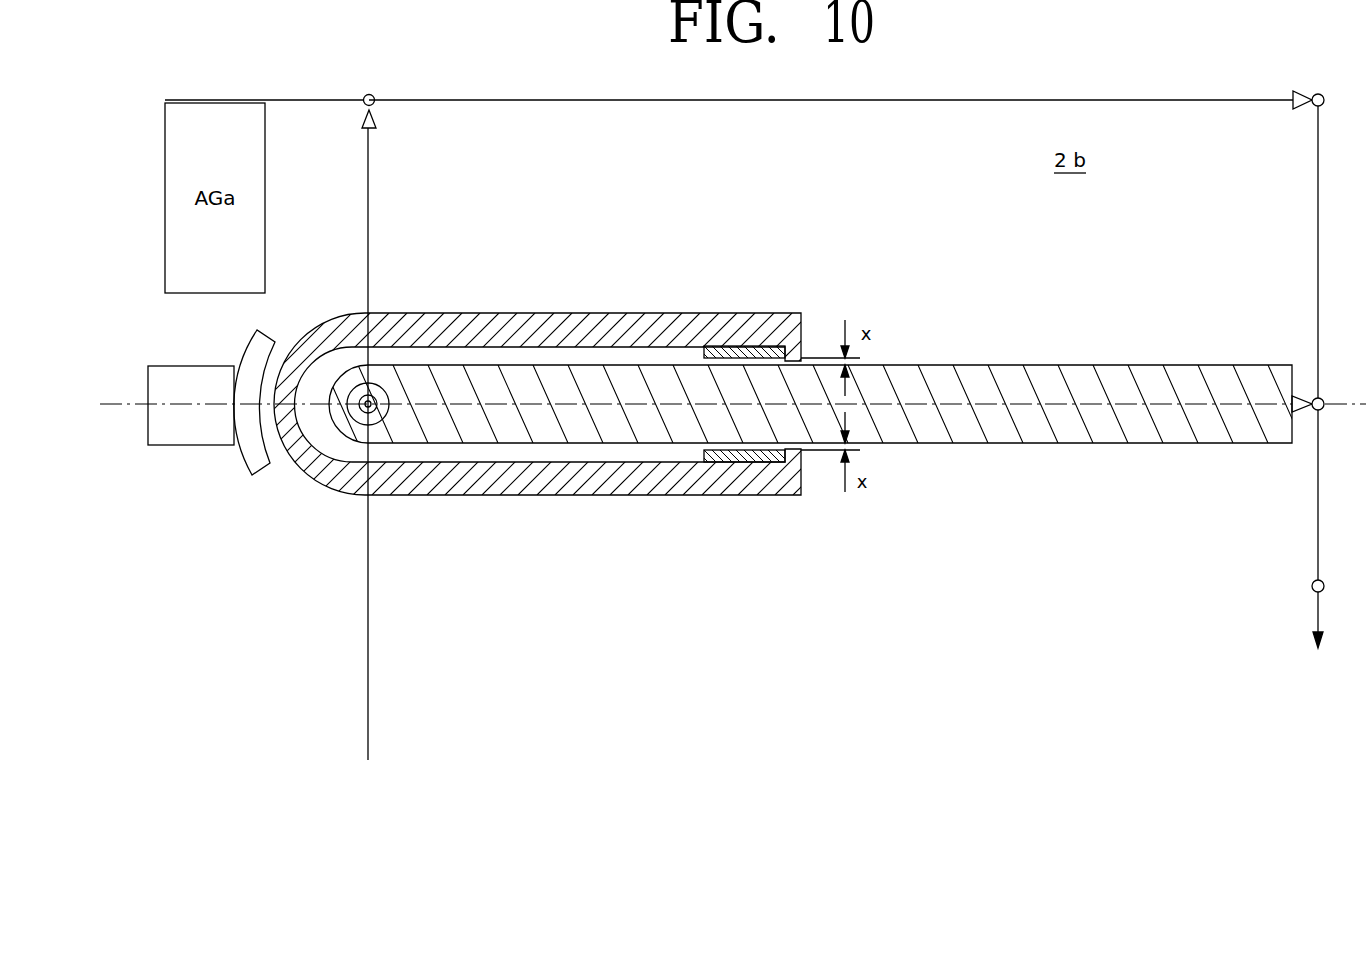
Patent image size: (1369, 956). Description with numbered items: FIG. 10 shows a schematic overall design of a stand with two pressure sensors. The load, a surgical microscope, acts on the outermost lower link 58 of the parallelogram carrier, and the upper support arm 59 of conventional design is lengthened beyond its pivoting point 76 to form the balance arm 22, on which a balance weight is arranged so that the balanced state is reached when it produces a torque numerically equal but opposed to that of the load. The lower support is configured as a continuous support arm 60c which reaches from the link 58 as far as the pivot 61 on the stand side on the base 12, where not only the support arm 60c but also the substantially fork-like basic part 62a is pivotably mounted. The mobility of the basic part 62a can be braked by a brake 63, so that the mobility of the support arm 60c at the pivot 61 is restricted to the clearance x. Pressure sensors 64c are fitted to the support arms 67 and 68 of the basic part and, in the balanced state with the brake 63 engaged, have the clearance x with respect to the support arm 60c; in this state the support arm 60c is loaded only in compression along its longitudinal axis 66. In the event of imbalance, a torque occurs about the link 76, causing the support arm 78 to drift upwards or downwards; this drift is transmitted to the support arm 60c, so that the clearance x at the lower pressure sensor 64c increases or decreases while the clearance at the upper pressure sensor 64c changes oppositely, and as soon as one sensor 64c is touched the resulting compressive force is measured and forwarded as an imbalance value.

The balance arm 22 is at (338, 100).
The pivoting point 76 is at (373, 100).
The upper support arm 59 is at (1042, 100).
The support arm 78 is at (1318, 240).
The outermost lower link 58 is at (1316, 412).
The base 12 is at (368, 658).
The longitudinal axis 66 is at (143, 406).
The brake 63 is at (242, 452).
The fork-like basic part 62a is at (530, 313).
The support arm 67 is at (697, 313).
The support arm 68 is at (645, 485).
The pressure sensor 64c is at (768, 346).
The continuous support arm 60c is at (1043, 443).
The pivot 61 is at (364, 416).